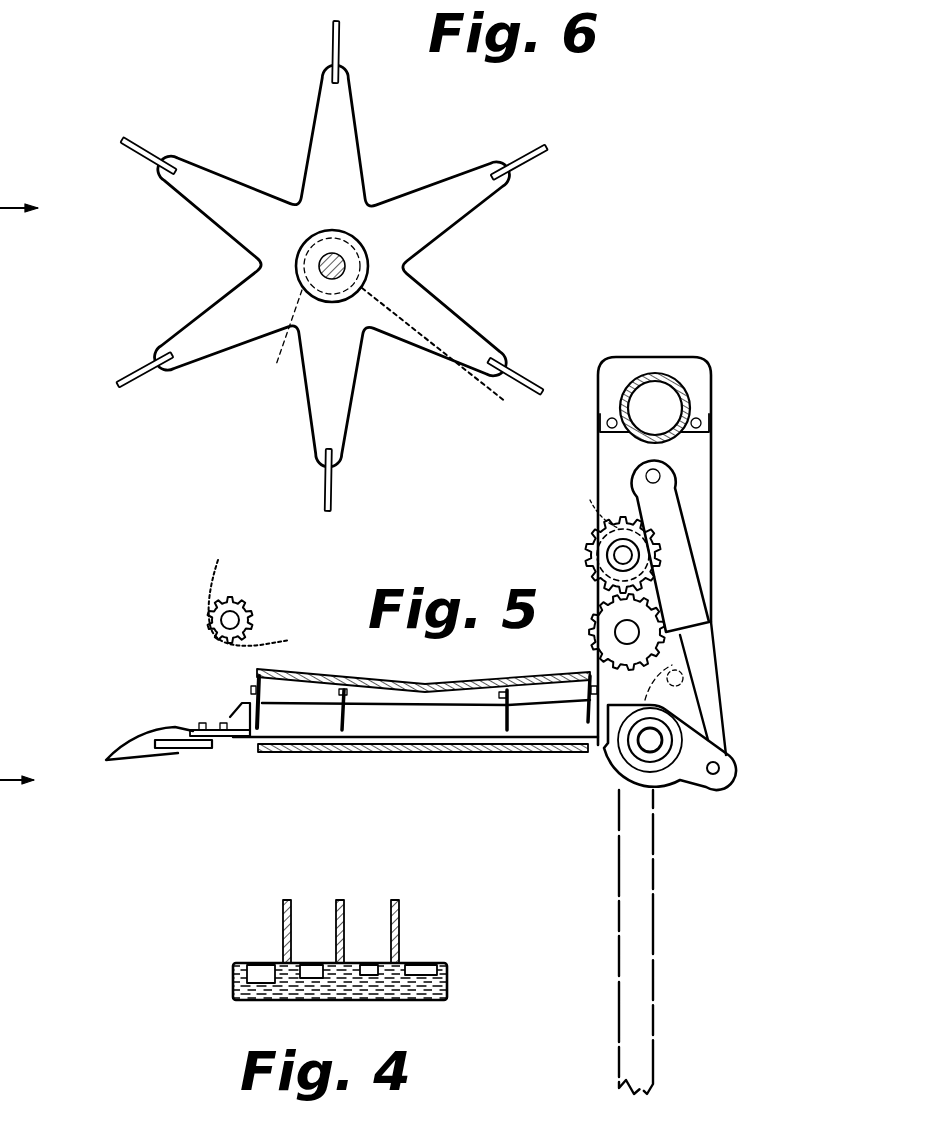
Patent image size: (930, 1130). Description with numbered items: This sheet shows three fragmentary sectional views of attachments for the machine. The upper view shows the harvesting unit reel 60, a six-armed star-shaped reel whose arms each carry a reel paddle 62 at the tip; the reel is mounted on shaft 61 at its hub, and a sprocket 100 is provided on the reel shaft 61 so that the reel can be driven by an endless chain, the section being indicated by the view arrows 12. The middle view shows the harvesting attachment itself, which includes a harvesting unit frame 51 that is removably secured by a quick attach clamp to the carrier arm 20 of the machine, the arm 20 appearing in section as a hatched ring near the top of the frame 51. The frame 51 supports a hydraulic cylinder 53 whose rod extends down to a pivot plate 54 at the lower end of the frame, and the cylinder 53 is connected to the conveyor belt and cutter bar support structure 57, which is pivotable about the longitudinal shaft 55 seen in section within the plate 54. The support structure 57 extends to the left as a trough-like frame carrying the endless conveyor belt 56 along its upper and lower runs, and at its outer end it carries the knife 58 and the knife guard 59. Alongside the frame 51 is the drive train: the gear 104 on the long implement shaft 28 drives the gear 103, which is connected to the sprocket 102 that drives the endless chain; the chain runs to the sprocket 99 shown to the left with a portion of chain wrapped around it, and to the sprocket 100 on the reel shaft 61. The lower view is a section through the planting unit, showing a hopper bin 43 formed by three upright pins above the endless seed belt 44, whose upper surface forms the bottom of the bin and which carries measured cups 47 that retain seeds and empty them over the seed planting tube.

In FIG. 5, the section line 12- 12 is at (28, 497).
In FIG. 5, the arm 20 is at (684, 392).
In FIG. 5, the long implement shaft 28 is at (607, 548).
In FIG. 4, the hopper bin 43 is at (308, 912).
In FIG. 4, the endless seed belt 44 is at (235, 986).
In FIG. 4, the measured cups 47 is at (258, 968).
In FIG. 5, the harvesting unit frame 51 is at (713, 467).
In FIG. 5, the hydraulic cylinder 53 is at (690, 545).
In FIG. 5, the pivot plate 54 is at (704, 789).
In FIG. 5, the longitudinal shaft 55 is at (638, 747).
In FIG. 5, the endless conveyor belt 56 is at (368, 680).
In FIG. 5, the conveyor belt and cutter bar support structure 57 is at (244, 745).
In FIG. 5, the knife 58 is at (152, 757).
In FIG. 5, the knife guard 59 is at (150, 737).
In FIG. 6, the harvesting unit reel 60 is at (391, 152).
In FIG. 6, the reel shaft 61 is at (337, 262).
In FIG. 6, the reel paddle 62 is at (330, 36).
In FIG. 5, the sprocket 99 is at (243, 596).
In FIG. 6, the sprocket 100 is at (312, 300).
In FIG. 5, the sprocket 102 is at (606, 522).
In FIG. 5, the gear 103 is at (590, 562).
In FIG. 5, the gear 104 is at (592, 628).